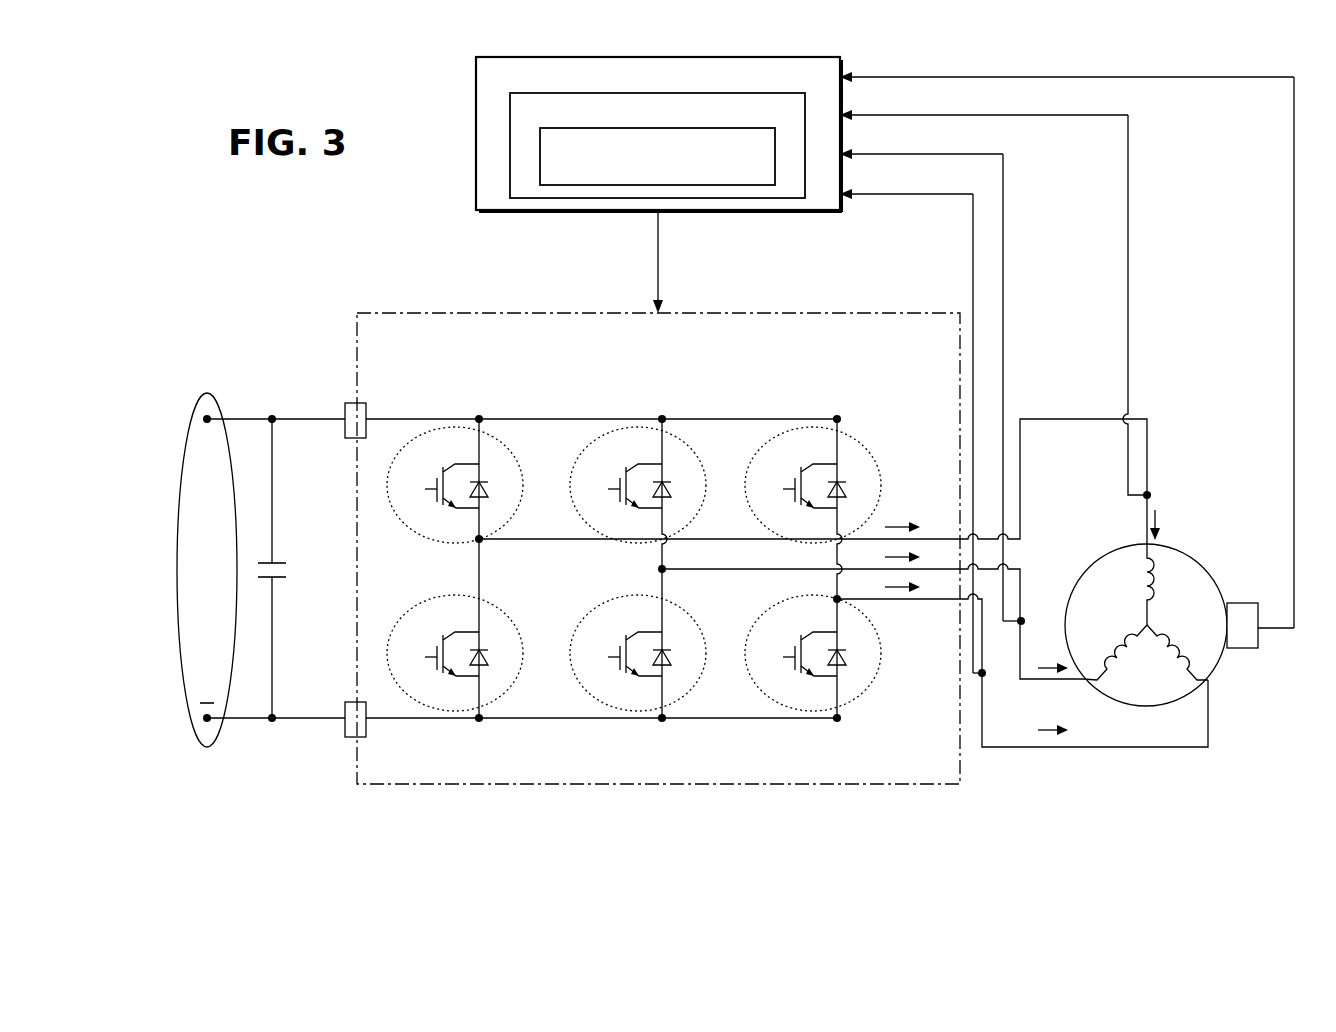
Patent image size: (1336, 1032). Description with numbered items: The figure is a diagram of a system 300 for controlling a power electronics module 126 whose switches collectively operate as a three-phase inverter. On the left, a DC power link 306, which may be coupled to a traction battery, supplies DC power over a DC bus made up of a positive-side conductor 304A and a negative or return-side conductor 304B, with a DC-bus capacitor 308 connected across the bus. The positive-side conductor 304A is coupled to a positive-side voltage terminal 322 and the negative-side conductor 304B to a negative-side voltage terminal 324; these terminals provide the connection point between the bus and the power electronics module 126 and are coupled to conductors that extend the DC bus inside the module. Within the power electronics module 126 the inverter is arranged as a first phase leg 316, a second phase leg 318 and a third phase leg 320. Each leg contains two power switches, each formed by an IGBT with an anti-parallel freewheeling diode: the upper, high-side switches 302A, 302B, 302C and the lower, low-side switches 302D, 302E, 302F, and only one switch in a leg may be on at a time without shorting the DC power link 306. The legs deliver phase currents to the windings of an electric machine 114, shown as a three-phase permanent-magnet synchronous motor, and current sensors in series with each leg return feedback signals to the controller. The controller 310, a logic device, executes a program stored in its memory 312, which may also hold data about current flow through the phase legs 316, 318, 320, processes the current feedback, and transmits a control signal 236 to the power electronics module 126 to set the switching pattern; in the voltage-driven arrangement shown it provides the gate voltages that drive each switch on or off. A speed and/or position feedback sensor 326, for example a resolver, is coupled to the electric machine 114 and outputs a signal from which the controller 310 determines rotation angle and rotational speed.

The system 300 is at (923, 49).
The controller 310 is at (658, 57).
The memory 312 is at (796, 93).
The control signal 236 is at (650, 258).
The DC power link 306 is at (207, 393).
The positive-side conductor 304A is at (300, 408).
The negative-side conductor 304B is at (296, 728).
The DC-bus capacitor 308 is at (278, 578).
The positive-side voltage terminal 322 is at (345, 410).
The negative-side voltage terminal 324 is at (345, 727).
The power electronics module 126 is at (525, 313).
The high-side switch 302A is at (447, 427).
The high-side switch 302B is at (630, 427).
The high-side switch 302C is at (806, 427).
The low-side switch 302D is at (450, 713).
The low-side switch 302E is at (630, 713).
The low-side switch 302F is at (805, 713).
The first phase leg 316 is at (479, 539).
The second phase leg 318 is at (662, 569).
The third phase leg 320 is at (837, 599).
The electric machine 114 is at (1203, 567).
The position feedback sensor 326 is at (1245, 648).